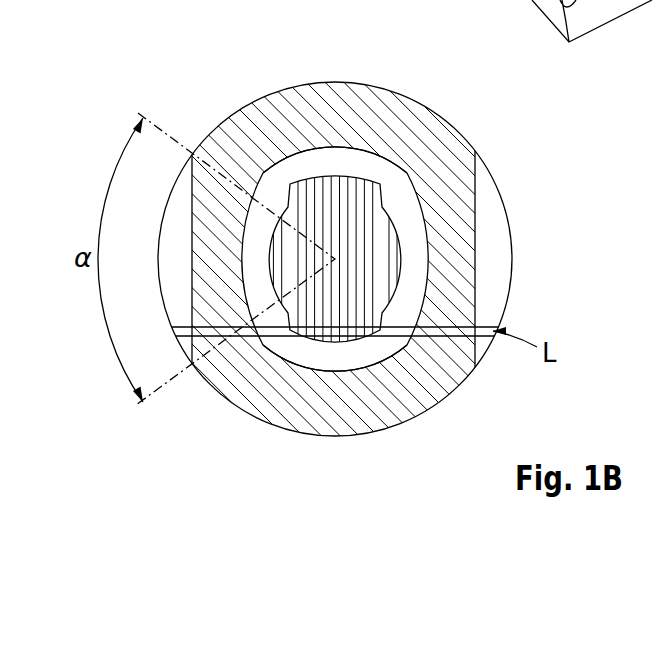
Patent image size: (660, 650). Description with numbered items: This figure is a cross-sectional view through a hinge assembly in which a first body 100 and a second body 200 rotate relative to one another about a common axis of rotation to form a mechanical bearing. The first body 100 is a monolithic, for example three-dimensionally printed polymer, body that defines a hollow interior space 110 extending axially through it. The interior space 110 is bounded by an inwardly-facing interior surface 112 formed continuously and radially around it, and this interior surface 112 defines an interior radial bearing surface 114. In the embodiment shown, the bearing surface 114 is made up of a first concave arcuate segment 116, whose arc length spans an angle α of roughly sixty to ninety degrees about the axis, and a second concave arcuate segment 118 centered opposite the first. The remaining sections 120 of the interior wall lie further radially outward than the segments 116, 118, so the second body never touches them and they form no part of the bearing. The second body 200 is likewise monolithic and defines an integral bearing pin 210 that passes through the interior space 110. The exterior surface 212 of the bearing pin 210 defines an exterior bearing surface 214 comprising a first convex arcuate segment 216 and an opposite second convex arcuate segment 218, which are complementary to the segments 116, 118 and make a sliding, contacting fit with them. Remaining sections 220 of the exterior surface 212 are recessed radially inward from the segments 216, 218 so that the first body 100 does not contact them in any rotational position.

The first body 100 is at (457, 212).
The interior space 110 is at (385, 358).
The interior surface 112 is at (363, 107).
The interior radial bearing surface 114 is at (407, 193).
The first concave arcuate segment 116 is at (242, 255).
The second concave arcuate segment 118 is at (424, 243).
The remaining sections 120 is at (382, 158).
The second body 200 is at (421, 242).
The bearing pin 210 is at (421, 242).
The exterior surface 212 is at (454, 260).
The exterior bearing surface 214 is at (307, 242).
The first convex arcuate segment 216 is at (328, 148).
The second convex arcuate segment 218 is at (305, 337).
The remaining sections 220 is at (398, 263).